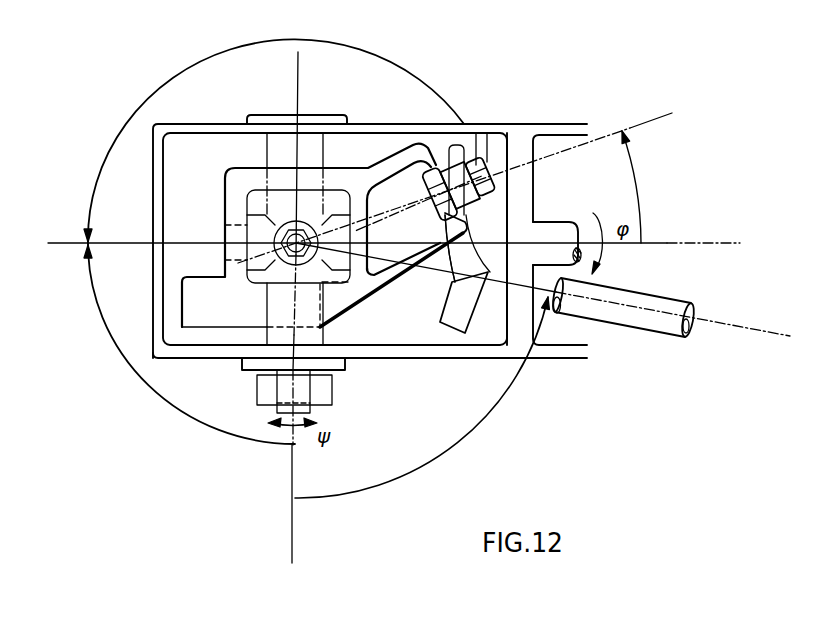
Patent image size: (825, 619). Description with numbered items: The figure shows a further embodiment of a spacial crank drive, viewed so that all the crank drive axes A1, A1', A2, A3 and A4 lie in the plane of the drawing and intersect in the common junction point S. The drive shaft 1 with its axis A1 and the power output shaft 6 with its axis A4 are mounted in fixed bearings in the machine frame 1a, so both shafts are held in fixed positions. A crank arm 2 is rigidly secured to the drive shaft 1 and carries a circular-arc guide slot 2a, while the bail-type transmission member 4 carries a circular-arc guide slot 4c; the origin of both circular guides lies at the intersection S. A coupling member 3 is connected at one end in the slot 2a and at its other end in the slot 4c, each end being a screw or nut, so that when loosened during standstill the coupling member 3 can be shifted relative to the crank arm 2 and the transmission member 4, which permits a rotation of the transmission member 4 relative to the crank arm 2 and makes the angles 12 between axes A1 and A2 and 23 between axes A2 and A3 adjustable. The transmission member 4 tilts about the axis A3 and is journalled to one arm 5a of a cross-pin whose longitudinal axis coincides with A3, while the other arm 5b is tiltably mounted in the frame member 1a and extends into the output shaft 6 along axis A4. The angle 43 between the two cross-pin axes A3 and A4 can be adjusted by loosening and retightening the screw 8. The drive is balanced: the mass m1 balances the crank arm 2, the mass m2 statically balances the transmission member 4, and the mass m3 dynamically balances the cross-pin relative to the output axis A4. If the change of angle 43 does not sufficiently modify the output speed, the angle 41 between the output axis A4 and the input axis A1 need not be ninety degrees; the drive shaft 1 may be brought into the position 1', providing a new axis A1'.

The drive shaft 1 is at (561, 230).
The drive shaft in shifted position 1' is at (623, 320).
The machine frame 1a is at (517, 342).
The crank arm 2 is at (458, 145).
The guide slot 2a is at (480, 203).
The coupling member 3 is at (468, 180).
The transmission member 4 is at (423, 148).
The guide slot 4c is at (430, 179).
The arm of the cross-pin 5a is at (257, 228).
The arm of the cross-pin 5b is at (308, 147).
The power output shaft 6 is at (289, 428).
The screw 8 is at (300, 232).
The common junction point S is at (328, 283).
The mass m1 is at (464, 302).
The mass m2 is at (204, 302).
The mass m3 is at (323, 390).
The angle between axes A4 and A1 41 is at (456, 419).
The angle between axes A2 and A3 23 is at (276, 138).
The angle between axes A3 and A4 43 is at (186, 344).
The angle between axes A1 and A2 12 is at (654, 187).
The axis of the drive shaft A1 is at (463, 248).
The new axis of the shifted drive shaft A1' is at (560, 299).
The axis A2 is at (470, 180).
The axis A3 is at (83, 245).
The axis of the power output shaft A4 is at (292, 322).